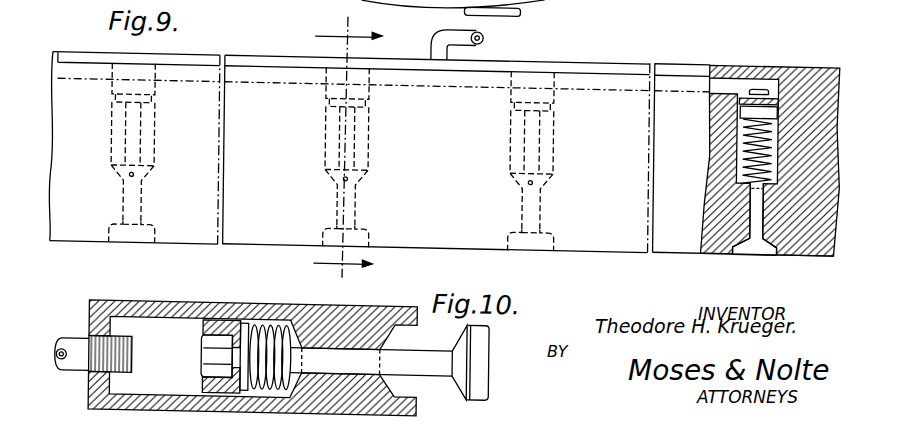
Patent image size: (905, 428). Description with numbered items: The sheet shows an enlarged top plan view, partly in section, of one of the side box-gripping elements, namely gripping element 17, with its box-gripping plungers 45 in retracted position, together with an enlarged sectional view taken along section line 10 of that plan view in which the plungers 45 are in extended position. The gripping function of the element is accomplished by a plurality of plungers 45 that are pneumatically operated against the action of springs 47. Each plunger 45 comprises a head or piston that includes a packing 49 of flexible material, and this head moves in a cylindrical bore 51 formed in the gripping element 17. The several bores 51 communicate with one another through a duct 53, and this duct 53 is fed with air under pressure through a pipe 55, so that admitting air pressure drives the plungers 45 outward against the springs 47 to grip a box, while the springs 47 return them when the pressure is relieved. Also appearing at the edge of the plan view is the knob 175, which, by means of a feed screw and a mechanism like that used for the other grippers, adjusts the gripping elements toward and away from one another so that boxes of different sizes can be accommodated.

In FIG. 9, the section line 10— 10 is at (347, 150).
In FIG. 9, the gripping element 17 is at (614, 235).
In FIG. 10, the gripping element 17 is at (350, 319).
In FIG. 9, the plunger 45 is at (137, 208).
In FIG. 10, the plunger 45 is at (430, 358).
In FIG. 9, the spring 47 is at (741, 152).
In FIG. 10, the spring 47 is at (270, 332).
In FIG. 9, the packing 49 is at (742, 94).
In FIG. 10, the packing 49 is at (227, 330).
In FIG. 9, the cylindrical bore 51 is at (360, 77).
In FIG. 10, the cylindrical bore 51 is at (117, 386).
In FIG. 9, the duct 53 is at (252, 75).
In FIG. 10, the duct 53 is at (130, 358).
In FIG. 9, the pipe 55 is at (443, 41).
In FIG. 10, the pipe 55 is at (77, 350).
In FIG. 9, the knob 175 is at (518, 9).